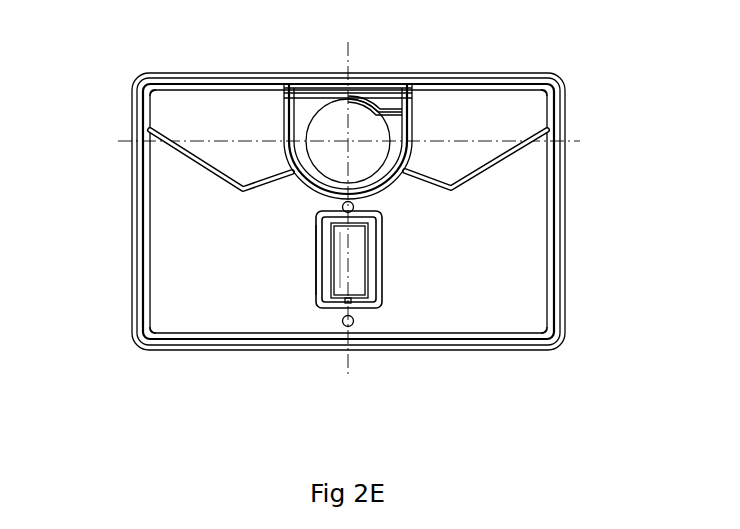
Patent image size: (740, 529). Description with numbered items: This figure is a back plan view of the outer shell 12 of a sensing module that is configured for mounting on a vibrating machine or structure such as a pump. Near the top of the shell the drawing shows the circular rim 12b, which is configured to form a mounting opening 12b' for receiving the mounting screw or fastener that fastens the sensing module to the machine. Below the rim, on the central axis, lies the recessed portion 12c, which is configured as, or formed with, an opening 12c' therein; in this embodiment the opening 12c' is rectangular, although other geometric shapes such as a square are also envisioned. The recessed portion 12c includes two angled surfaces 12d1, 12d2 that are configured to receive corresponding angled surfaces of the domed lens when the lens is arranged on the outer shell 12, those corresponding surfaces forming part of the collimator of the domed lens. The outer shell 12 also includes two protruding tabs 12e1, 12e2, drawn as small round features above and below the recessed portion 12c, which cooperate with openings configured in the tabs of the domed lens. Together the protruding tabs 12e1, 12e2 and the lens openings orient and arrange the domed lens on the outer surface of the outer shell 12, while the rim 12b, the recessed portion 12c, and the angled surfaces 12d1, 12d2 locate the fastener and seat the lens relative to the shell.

The outer shell 12 is at (142, 356).
The circular rim 12b is at (361, 108).
The mounting opening 12b' is at (331, 103).
The recessed portion 12c is at (503, 286).
The opening 12c' is at (289, 329).
The angled surface 12d1 is at (369, 241).
The angled surface 12d2 is at (330, 252).
The protruding tab 12e1 is at (354, 206).
The protruding tab 12e2 is at (355, 323).